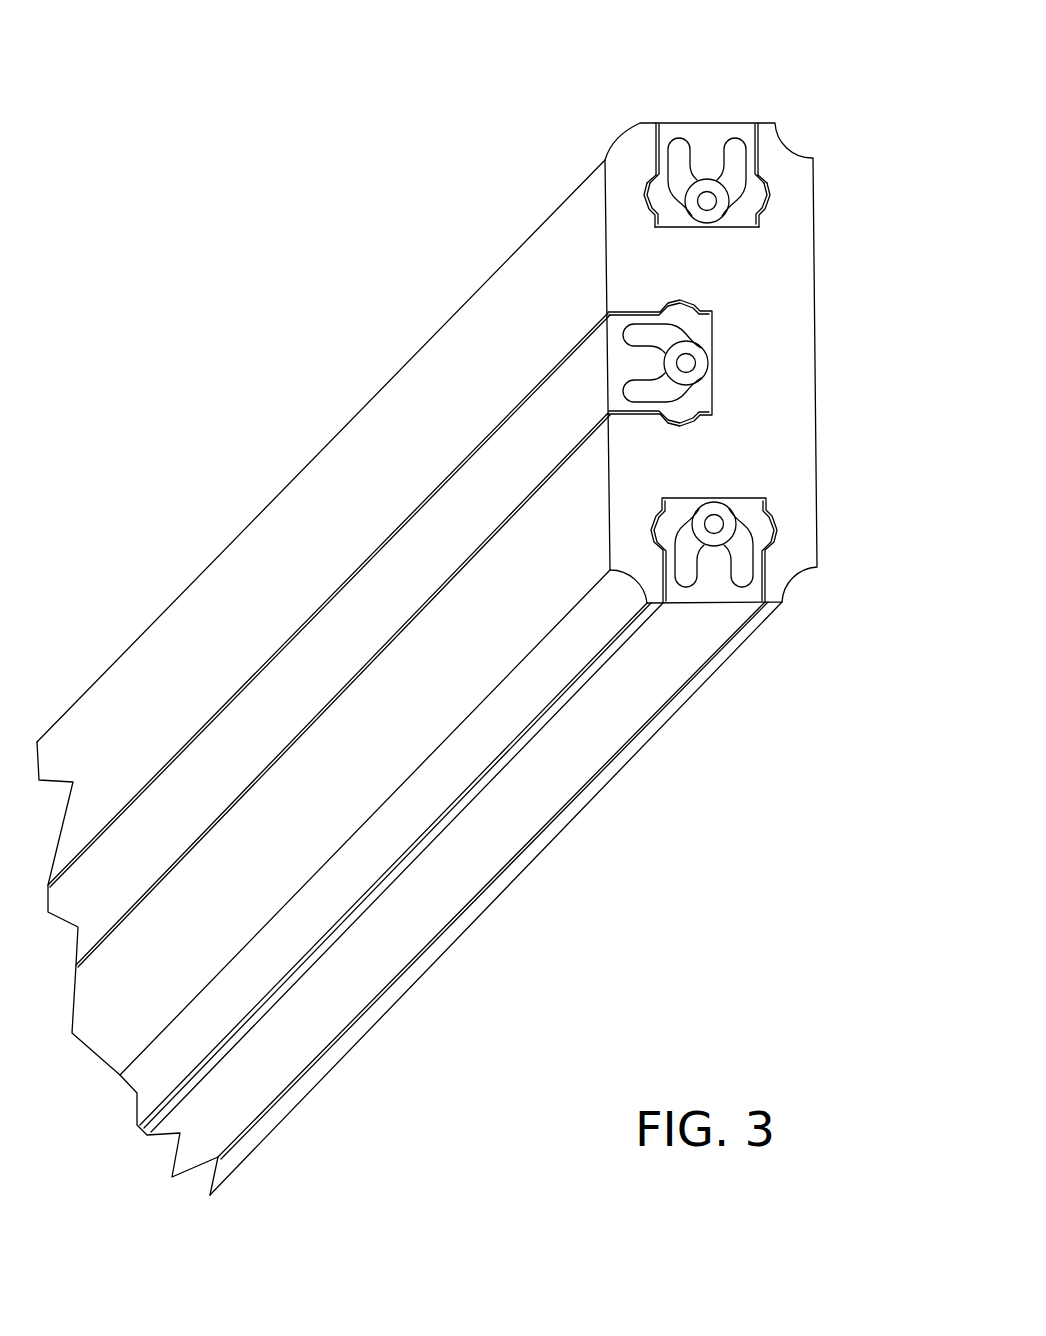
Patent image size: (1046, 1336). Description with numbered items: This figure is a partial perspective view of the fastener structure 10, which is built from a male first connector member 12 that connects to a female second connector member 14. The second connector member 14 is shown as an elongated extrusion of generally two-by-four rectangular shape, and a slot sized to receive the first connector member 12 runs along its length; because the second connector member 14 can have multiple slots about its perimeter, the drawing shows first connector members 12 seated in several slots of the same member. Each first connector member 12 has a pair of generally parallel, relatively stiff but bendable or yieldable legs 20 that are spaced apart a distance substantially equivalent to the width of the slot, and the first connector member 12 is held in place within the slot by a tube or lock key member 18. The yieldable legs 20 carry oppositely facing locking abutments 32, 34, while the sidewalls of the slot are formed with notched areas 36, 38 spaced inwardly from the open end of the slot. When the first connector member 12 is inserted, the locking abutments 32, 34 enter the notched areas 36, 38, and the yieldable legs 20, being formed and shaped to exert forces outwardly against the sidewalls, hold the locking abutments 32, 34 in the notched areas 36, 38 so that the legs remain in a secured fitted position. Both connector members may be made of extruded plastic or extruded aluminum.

The fastener structure 10 is at (475, 633).
The first connector member 12 is at (700, 149).
The second connector member 14 is at (475, 659).
The lock key member 18 is at (735, 243).
The yieldable legs 20 is at (715, 260).
The locking abutment 32 is at (833, 166).
The locking abutment 34 is at (565, 152).
The notched area 36 is at (557, 209).
The notched area 38 is at (834, 211).